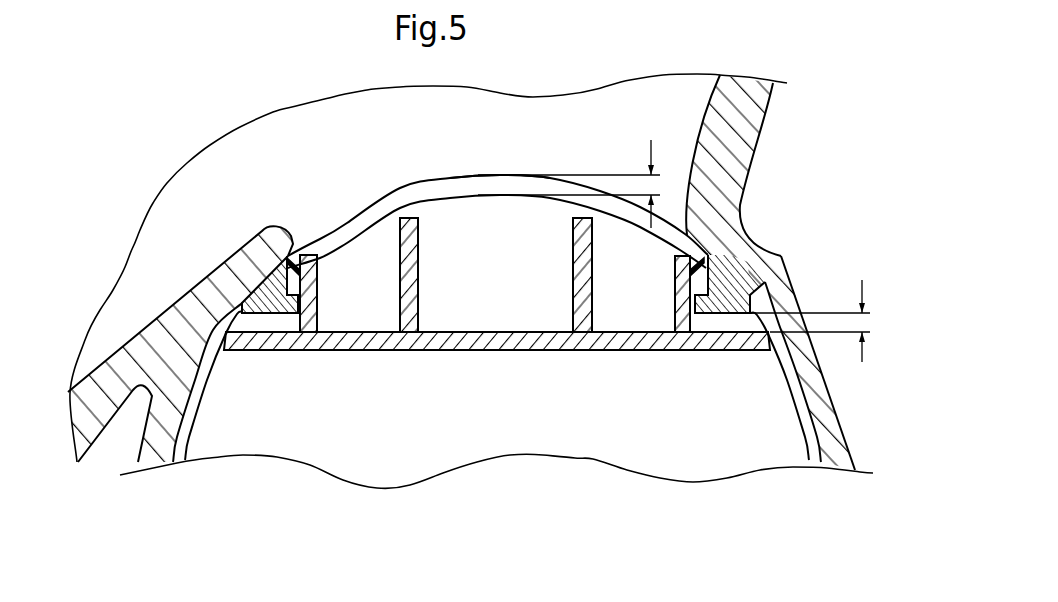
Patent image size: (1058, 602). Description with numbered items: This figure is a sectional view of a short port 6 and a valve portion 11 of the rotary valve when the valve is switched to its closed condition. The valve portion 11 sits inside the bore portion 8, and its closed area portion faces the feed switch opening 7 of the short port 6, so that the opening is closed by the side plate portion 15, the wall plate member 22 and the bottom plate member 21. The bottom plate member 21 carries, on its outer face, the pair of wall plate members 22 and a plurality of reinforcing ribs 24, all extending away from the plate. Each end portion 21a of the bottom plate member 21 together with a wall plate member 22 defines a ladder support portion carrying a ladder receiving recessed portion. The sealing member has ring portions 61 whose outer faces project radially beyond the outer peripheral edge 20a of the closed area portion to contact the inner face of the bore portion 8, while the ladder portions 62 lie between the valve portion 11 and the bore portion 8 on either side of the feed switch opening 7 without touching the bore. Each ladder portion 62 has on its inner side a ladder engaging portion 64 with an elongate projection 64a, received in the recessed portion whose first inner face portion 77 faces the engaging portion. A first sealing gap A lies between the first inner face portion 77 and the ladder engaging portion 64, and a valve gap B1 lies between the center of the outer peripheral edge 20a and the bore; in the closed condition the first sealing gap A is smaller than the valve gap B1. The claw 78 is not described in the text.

The short port 6 is at (670, 132).
The feed switch opening 7 is at (297, 242).
The bore portion 8 is at (850, 447).
The valve portion 11 is at (599, 436).
The side plate portion 15 is at (490, 214).
The outer peripheral edge of the closed area portion 20a is at (480, 196).
The bottom plate member 21 is at (493, 351).
The end portion of the bottom plate member 21a is at (253, 349).
The wall plate member 22 is at (318, 264).
The reinforcing rib 24 is at (418, 258).
The ring portion 61 is at (353, 213).
The ladder portion 62 is at (252, 304).
The ladder engaging portion 64 is at (253, 350).
The elongate projection 64a is at (320, 350).
The first inner face portion 77 is at (252, 311).
The claw 78 is at (300, 284).
The first sealing gap A is at (820, 321).
The valve gap B1 is at (569, 184).